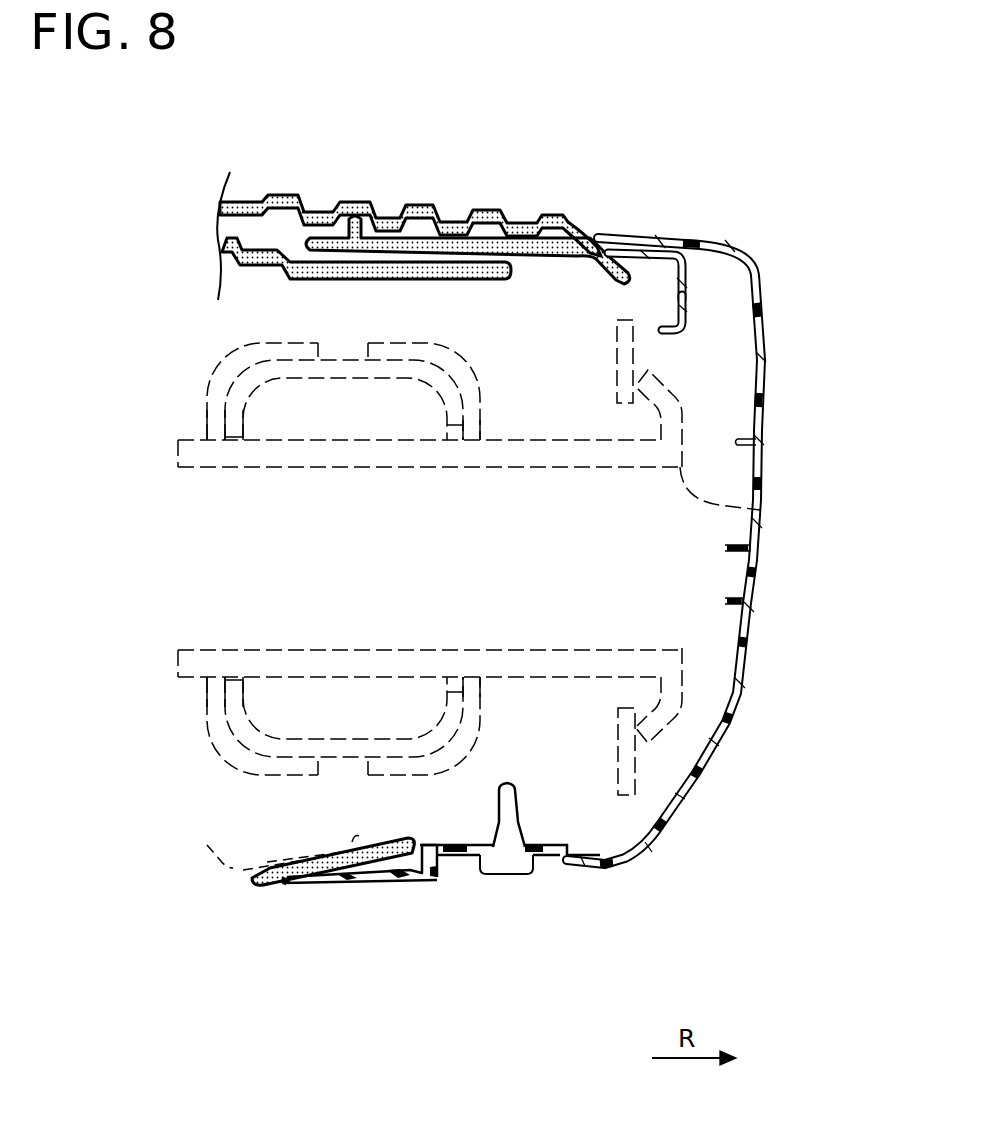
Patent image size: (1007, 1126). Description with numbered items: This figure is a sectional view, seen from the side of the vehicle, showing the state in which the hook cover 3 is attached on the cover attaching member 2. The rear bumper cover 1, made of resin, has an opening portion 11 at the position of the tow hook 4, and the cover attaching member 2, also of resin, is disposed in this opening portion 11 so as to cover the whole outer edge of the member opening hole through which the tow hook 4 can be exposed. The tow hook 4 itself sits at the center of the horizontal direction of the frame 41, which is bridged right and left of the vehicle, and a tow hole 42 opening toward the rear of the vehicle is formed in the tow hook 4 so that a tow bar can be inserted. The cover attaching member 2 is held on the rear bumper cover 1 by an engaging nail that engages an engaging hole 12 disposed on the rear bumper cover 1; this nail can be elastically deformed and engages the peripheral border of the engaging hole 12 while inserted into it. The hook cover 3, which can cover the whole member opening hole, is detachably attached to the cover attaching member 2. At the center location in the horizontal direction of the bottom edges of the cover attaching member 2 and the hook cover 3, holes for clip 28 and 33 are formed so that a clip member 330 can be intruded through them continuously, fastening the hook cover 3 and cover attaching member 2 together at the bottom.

The rear bumper cover 1 is at (427, 190).
The cover attaching member 2 is at (333, 898).
The hook cover 3 is at (726, 742).
The tow hook 4 is at (692, 615).
The opening portion 11 is at (626, 281).
The engaging hole 12 is at (665, 350).
The hole for clip 28 is at (512, 855).
The hole for clip 33 is at (500, 857).
The frame 41 is at (238, 718).
The tow hole 42 is at (760, 510).
The clip member 330 is at (507, 827).